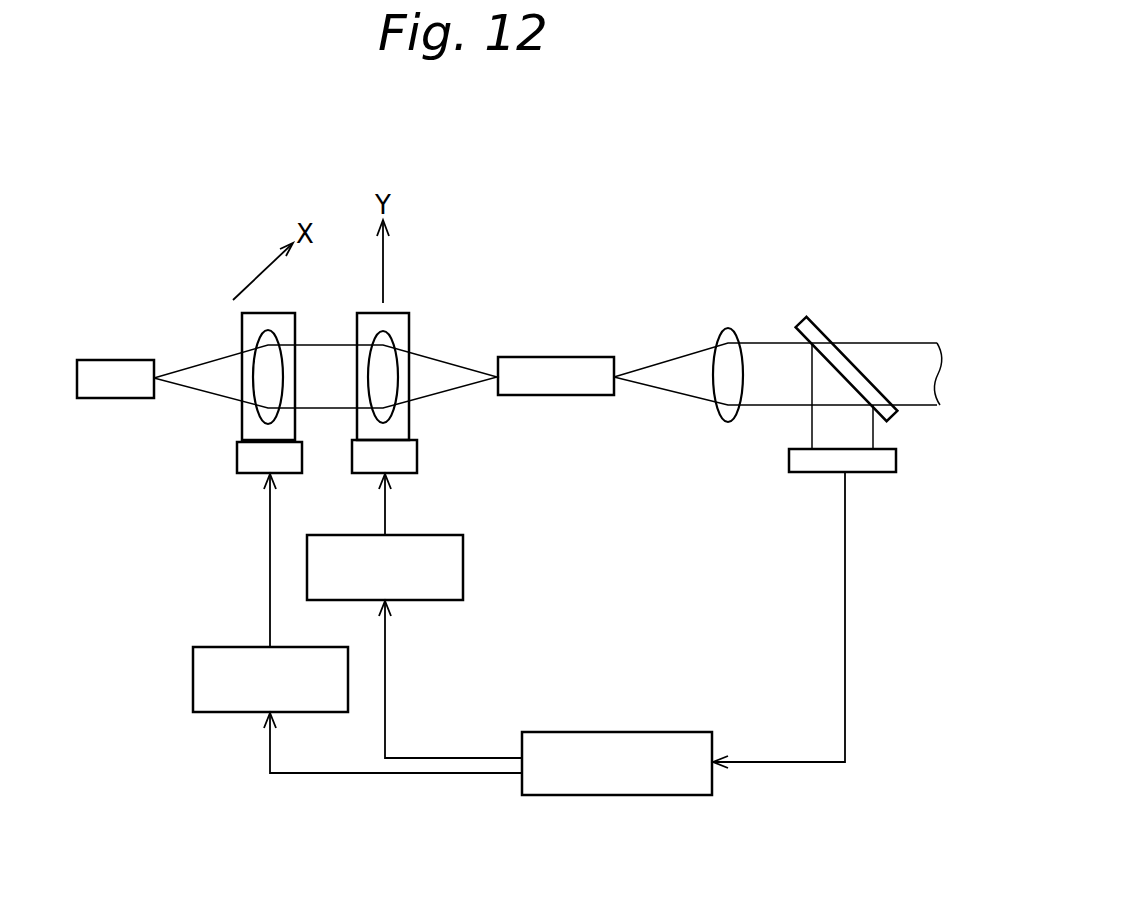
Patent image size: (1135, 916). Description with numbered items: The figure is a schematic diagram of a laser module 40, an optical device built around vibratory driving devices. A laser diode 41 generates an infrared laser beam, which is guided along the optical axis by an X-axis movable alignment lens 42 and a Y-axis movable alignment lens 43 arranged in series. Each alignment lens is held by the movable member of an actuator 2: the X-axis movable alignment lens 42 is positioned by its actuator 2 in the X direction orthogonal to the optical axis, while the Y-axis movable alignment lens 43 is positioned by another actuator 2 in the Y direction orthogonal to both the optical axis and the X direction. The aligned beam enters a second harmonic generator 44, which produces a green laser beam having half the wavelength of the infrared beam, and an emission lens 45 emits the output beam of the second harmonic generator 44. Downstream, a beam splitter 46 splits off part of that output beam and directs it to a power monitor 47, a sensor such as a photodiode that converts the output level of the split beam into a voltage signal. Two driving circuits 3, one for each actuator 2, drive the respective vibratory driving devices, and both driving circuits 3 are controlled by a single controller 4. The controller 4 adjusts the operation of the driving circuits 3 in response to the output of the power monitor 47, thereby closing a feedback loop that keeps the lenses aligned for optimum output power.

The actuator 2 is at (237, 455).
The driving circuit 3 is at (223, 647).
The controller 4 is at (613, 732).
The laser module 40 is at (209, 244).
The laser diode 41 is at (113, 360).
The X-axis movable alignment lens 42 is at (242, 330).
The Y-axis movable alignment lens 43 is at (409, 330).
The second harmonic generator 44 is at (558, 357).
The emission lens 45 is at (727, 328).
The beam splitter 46 is at (825, 332).
The power monitor 47 is at (873, 475).